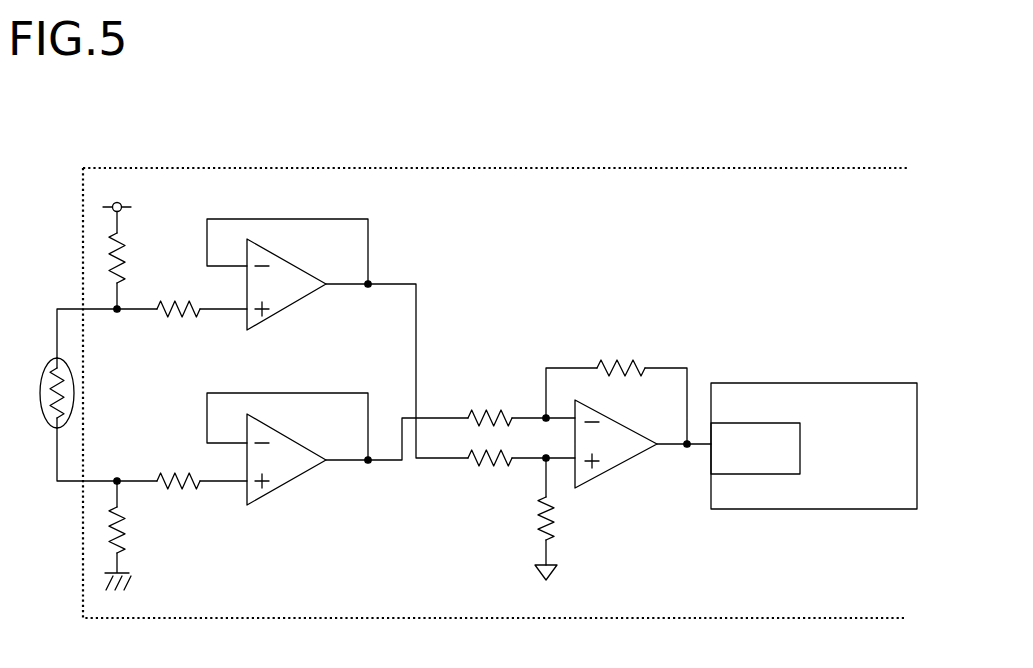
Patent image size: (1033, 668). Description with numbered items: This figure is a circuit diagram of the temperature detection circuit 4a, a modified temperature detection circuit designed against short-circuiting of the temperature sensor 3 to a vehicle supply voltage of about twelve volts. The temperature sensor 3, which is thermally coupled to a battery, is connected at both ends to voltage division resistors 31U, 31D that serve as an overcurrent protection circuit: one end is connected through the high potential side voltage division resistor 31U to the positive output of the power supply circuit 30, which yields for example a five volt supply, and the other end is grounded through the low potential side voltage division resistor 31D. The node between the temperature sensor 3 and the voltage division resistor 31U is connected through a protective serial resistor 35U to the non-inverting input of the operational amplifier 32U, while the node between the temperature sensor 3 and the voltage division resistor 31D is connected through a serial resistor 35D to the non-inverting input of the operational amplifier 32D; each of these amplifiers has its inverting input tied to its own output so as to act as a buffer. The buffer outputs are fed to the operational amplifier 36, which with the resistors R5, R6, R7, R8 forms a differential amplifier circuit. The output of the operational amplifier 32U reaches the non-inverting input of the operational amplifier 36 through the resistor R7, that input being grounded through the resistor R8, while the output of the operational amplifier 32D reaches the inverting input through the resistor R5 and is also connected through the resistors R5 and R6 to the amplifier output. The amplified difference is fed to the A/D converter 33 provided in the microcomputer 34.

The temperature sensor 3 is at (54, 427).
The temperature detection circuit 4a is at (241, 168).
The power supply circuit 30 is at (124, 207).
The high potential side voltage division resistor 31U is at (104, 274).
The low potential side voltage division resistor 31D is at (110, 520).
The serial resistor 35U is at (178, 300).
The serial resistor 35D is at (183, 497).
The operational amplifier 32U is at (288, 262).
The operational amplifier 32D is at (277, 430).
The resistor R5 is at (490, 402).
The resistor R6 is at (621, 354).
The resistor R7 is at (490, 480).
The resistor R8 is at (566, 519).
The operational amplifier 36 is at (616, 468).
The microcomputer 34 is at (848, 383).
The A/D converter 33 is at (756, 474).